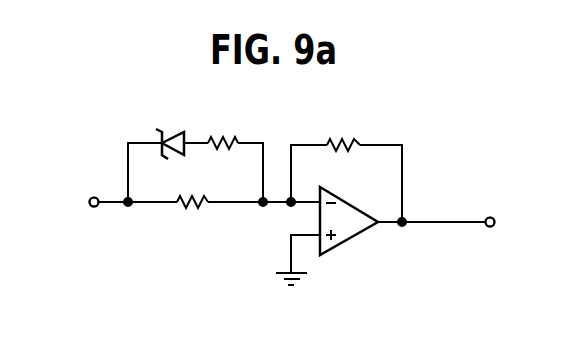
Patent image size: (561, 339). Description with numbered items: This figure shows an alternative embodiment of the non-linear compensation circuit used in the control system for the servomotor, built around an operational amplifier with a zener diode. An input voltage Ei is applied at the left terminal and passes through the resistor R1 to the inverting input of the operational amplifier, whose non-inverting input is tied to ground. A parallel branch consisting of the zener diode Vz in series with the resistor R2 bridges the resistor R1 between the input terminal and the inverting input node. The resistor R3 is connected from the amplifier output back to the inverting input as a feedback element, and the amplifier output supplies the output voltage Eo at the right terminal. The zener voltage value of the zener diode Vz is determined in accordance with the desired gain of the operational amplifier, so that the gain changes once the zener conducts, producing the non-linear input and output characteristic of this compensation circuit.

The input voltage Ei is at (80, 202).
The output voltage Eo is at (489, 207).
The input resistor R1 is at (203, 197).
The series resistor R2 is at (226, 136).
The feedback resistor R3 is at (349, 137).
The zener diode Vz is at (189, 129).